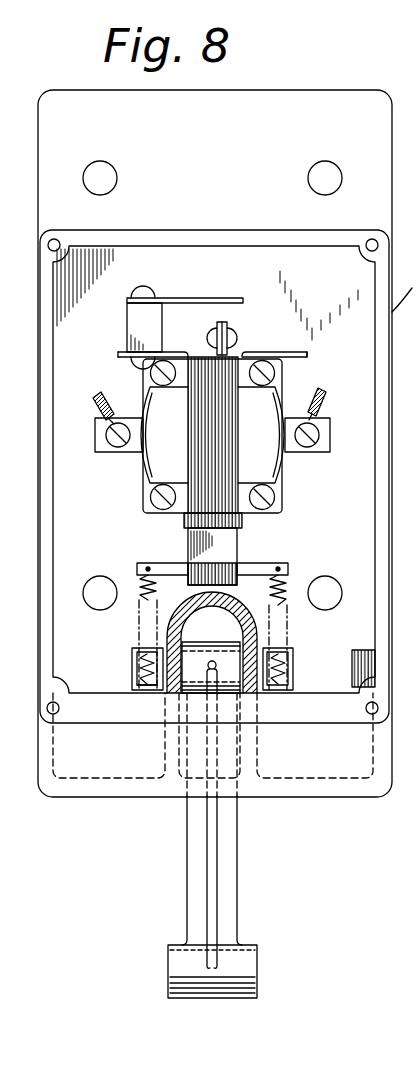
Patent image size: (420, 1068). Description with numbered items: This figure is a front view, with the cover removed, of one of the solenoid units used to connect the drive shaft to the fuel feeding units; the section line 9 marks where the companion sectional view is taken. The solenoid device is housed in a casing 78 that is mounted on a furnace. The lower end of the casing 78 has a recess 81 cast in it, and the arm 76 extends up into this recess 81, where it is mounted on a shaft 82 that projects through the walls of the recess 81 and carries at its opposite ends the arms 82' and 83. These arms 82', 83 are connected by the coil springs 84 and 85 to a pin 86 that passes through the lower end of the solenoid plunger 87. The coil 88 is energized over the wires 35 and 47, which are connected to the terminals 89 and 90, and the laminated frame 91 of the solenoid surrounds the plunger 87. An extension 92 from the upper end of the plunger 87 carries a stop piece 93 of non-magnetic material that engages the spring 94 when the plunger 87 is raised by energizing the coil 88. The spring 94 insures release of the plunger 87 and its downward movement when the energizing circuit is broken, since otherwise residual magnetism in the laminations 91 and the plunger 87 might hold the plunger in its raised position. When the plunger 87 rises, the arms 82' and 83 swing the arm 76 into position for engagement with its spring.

The section line 9- 9 is at (327, 87).
The wire 35 is at (114, 393).
The wire 47 is at (327, 411).
The arm 76 is at (230, 877).
The casing 78 is at (227, 229).
The recess 81 is at (212, 642).
The shaft 82 is at (127, 669).
The arm 82' is at (122, 700).
The arm 83 is at (285, 690).
The coil spring 84 is at (140, 590).
The coil spring 85 is at (281, 604).
The pin 86 is at (157, 562).
The solenoid plunger 87 is at (239, 543).
The coil 88 is at (267, 462).
The terminal 89 is at (117, 452).
The terminal 90 is at (311, 447).
The laminated frame 91 is at (225, 497).
The extension 92 is at (210, 328).
The stop piece 93 is at (229, 326).
The spring 94 is at (237, 300).